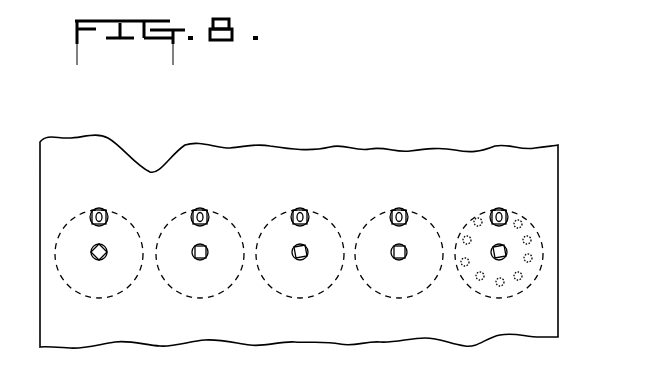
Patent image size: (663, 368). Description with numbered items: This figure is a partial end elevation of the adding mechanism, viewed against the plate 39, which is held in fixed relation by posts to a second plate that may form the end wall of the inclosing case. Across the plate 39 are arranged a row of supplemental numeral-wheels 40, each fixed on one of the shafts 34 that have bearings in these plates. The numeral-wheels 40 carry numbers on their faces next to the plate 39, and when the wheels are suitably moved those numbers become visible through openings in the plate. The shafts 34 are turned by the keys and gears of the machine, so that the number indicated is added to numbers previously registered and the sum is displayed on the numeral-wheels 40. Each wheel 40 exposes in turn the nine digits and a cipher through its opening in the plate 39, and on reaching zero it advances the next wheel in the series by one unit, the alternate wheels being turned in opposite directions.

The shaft 34 is at (99, 260).
The plate 39 is at (341, 340).
The supplemental numeral-wheel 40 is at (72, 204).